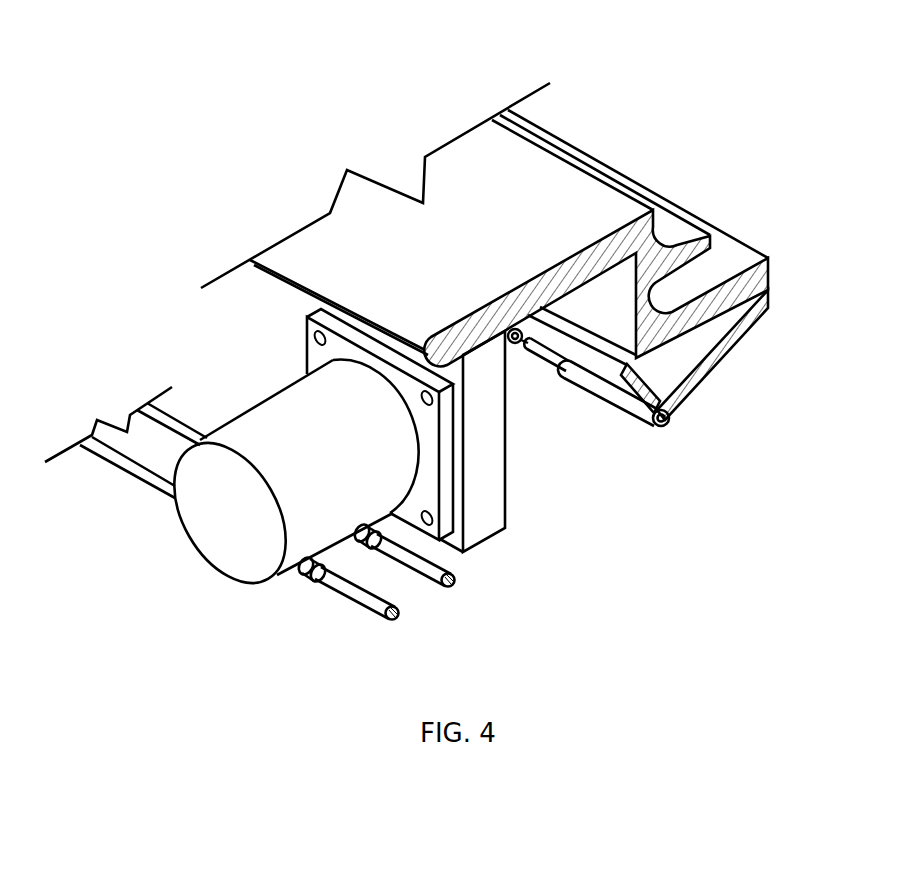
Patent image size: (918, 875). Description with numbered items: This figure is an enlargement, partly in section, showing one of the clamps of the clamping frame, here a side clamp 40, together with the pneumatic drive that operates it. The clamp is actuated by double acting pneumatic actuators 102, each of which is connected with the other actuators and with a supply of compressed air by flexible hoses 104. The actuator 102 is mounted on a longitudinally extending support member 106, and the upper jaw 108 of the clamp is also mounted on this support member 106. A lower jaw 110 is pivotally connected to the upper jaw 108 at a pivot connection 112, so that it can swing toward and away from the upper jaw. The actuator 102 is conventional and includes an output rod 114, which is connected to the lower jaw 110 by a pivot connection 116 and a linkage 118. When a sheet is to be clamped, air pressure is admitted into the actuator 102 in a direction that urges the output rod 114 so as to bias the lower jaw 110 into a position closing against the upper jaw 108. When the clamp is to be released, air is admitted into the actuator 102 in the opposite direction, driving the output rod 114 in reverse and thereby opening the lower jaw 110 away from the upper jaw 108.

The side clamp 40 is at (602, 108).
The double acting pneumatic actuator 102 is at (212, 565).
The flexible hoses 104 is at (140, 482).
The support member 106 is at (505, 529).
The upper jaw 108 is at (575, 210).
The lower jaw 110 is at (722, 357).
The pivot connection 112 is at (619, 402).
The output rod 114 is at (520, 355).
The pivot connection 116 is at (665, 424).
The linkage 118 is at (606, 392).